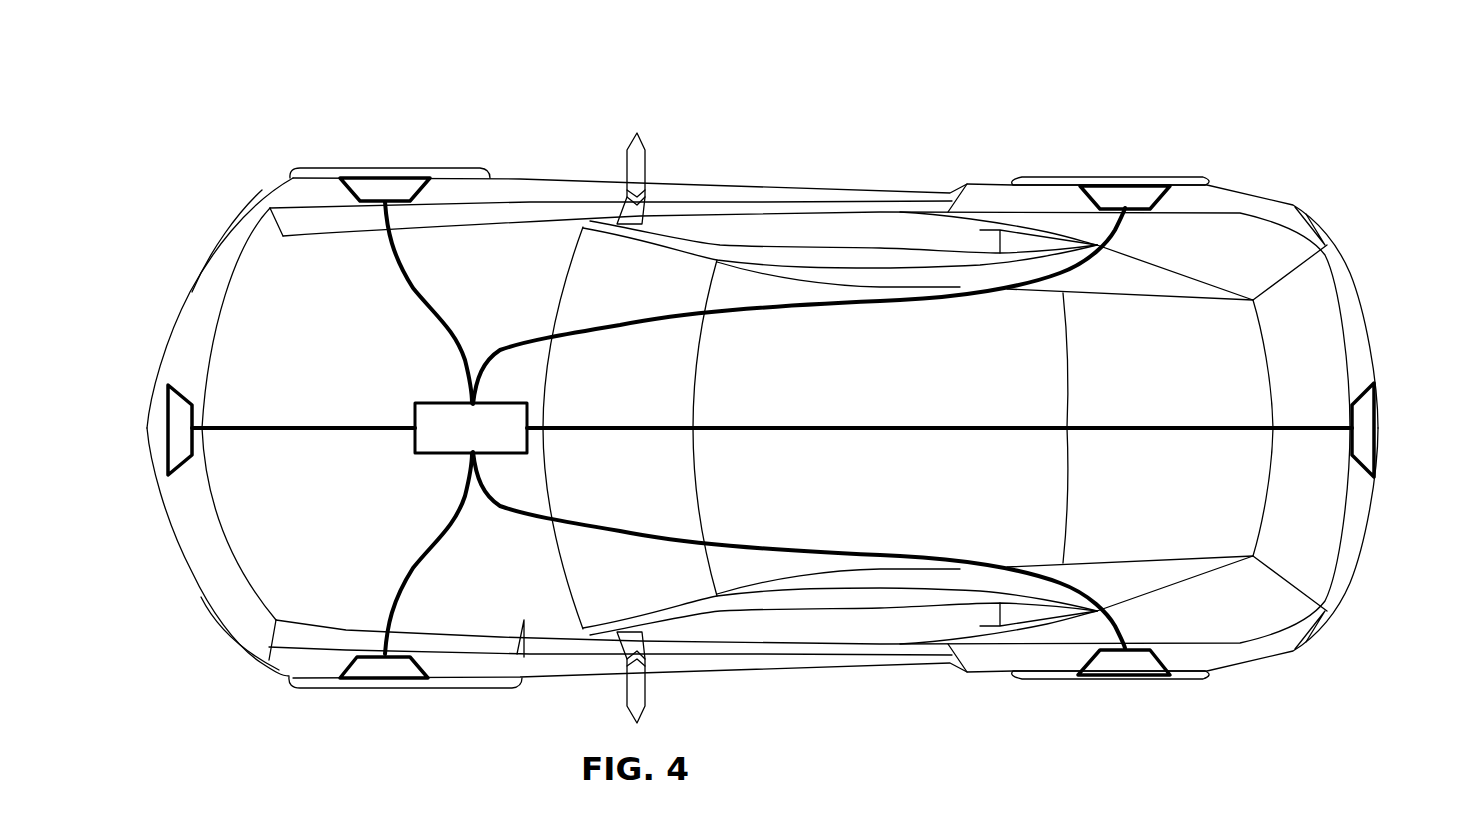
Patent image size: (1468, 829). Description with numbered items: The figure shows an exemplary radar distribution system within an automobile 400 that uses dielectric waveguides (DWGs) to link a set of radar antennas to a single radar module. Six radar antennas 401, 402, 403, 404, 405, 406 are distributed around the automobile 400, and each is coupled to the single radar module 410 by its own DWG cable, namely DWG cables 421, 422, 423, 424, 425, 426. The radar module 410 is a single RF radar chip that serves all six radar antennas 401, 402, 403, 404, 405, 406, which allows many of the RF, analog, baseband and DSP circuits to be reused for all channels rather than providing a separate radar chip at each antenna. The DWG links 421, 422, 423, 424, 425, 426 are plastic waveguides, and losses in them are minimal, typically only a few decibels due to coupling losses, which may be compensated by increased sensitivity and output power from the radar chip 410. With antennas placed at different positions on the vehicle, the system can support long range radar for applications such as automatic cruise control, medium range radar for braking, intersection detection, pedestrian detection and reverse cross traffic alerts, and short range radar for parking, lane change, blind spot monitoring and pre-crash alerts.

The automobile 400 is at (762, 428).
The radar antenna 401 is at (377, 177).
The radar antenna 402 is at (1134, 185).
The radar antenna 403 is at (167, 438).
The radar antenna 404 is at (372, 680).
The radar antenna 405 is at (1136, 677).
The radar antenna 406 is at (1378, 439).
The radar module 410 is at (414, 416).
The DWG cable 421 is at (431, 302).
The DWG cable 422 is at (797, 309).
The DWG cable 423 is at (940, 426).
The DWG cable 424 is at (797, 548).
The DWG cable 425 is at (431, 553).
The DWG cable 426 is at (300, 431).